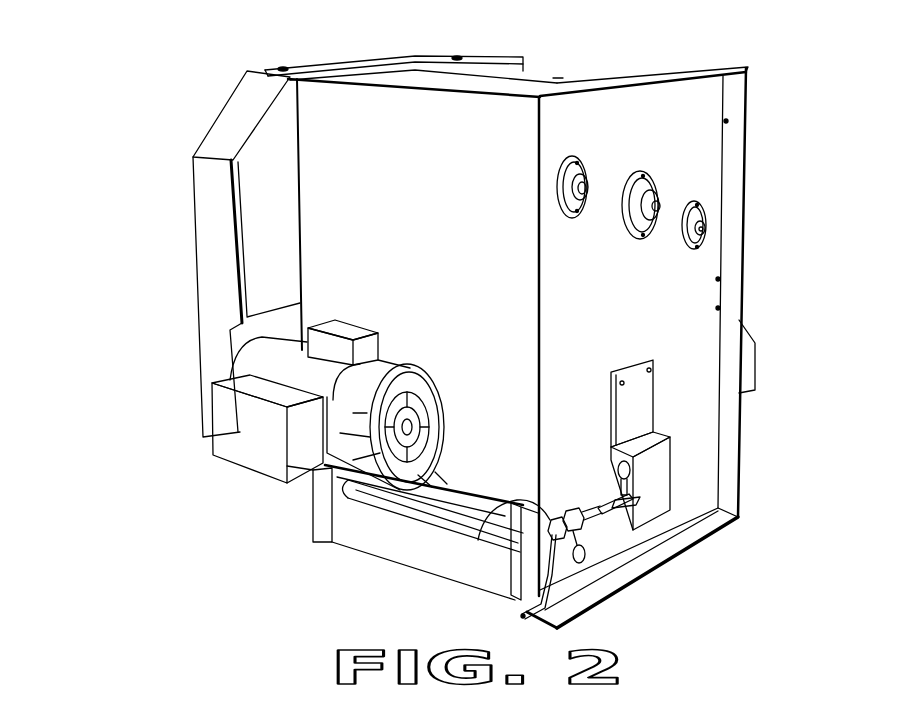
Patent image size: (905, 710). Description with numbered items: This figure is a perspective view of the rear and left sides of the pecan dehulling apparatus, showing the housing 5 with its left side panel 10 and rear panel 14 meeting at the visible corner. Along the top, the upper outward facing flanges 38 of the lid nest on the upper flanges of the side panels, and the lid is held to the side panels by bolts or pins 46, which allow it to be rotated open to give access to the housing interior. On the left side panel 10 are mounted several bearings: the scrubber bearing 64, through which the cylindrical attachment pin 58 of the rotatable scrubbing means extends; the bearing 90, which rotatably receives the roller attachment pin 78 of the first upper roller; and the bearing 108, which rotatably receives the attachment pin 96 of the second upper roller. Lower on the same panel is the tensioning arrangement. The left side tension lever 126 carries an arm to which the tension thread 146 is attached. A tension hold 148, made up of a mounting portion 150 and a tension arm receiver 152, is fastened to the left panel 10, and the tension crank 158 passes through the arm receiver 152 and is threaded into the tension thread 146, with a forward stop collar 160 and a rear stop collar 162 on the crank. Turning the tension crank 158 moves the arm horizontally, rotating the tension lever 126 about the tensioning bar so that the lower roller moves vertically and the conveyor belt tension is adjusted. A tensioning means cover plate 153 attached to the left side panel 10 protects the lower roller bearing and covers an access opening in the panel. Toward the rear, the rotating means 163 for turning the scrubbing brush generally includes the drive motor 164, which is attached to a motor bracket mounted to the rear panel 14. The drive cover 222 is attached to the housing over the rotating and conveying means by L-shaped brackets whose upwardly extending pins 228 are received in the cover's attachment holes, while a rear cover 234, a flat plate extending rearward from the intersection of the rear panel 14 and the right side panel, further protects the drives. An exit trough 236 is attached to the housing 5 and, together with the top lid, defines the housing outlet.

The housing 5 is at (560, 80).
The left side panel 10 is at (692, 330).
The rear panel 14 is at (323, 278).
The upper outward facing flanges 38 is at (327, 67).
The bolts or pins 46 is at (726, 121).
The cylindrical attachment pin 58 is at (653, 203).
The scrubber bearing 64 is at (653, 173).
The roller attachment pin 78 is at (590, 193).
The bearing 90 is at (577, 160).
The attachment pin 96 is at (707, 230).
The bearing 108 is at (700, 247).
The left side tension lever 126 is at (630, 527).
The tension thread 146 is at (565, 520).
The tension hold 148 is at (405, 503).
The mounting portion 150 is at (490, 535).
The tension arm receiver 152 is at (517, 597).
The tensioning means cover plate 153 is at (660, 460).
The tension crank 158 is at (523, 615).
The forward stop collar 160 is at (582, 562).
The rear stop collar 162 is at (517, 553).
The rotating means 163 is at (250, 367).
The drive motor 164 is at (267, 429).
The drive cover 222 is at (203, 140).
The upwardly extending pins 228 is at (283, 67).
The rear cover 234 is at (247, 232).
The exit trough 236 is at (755, 353).